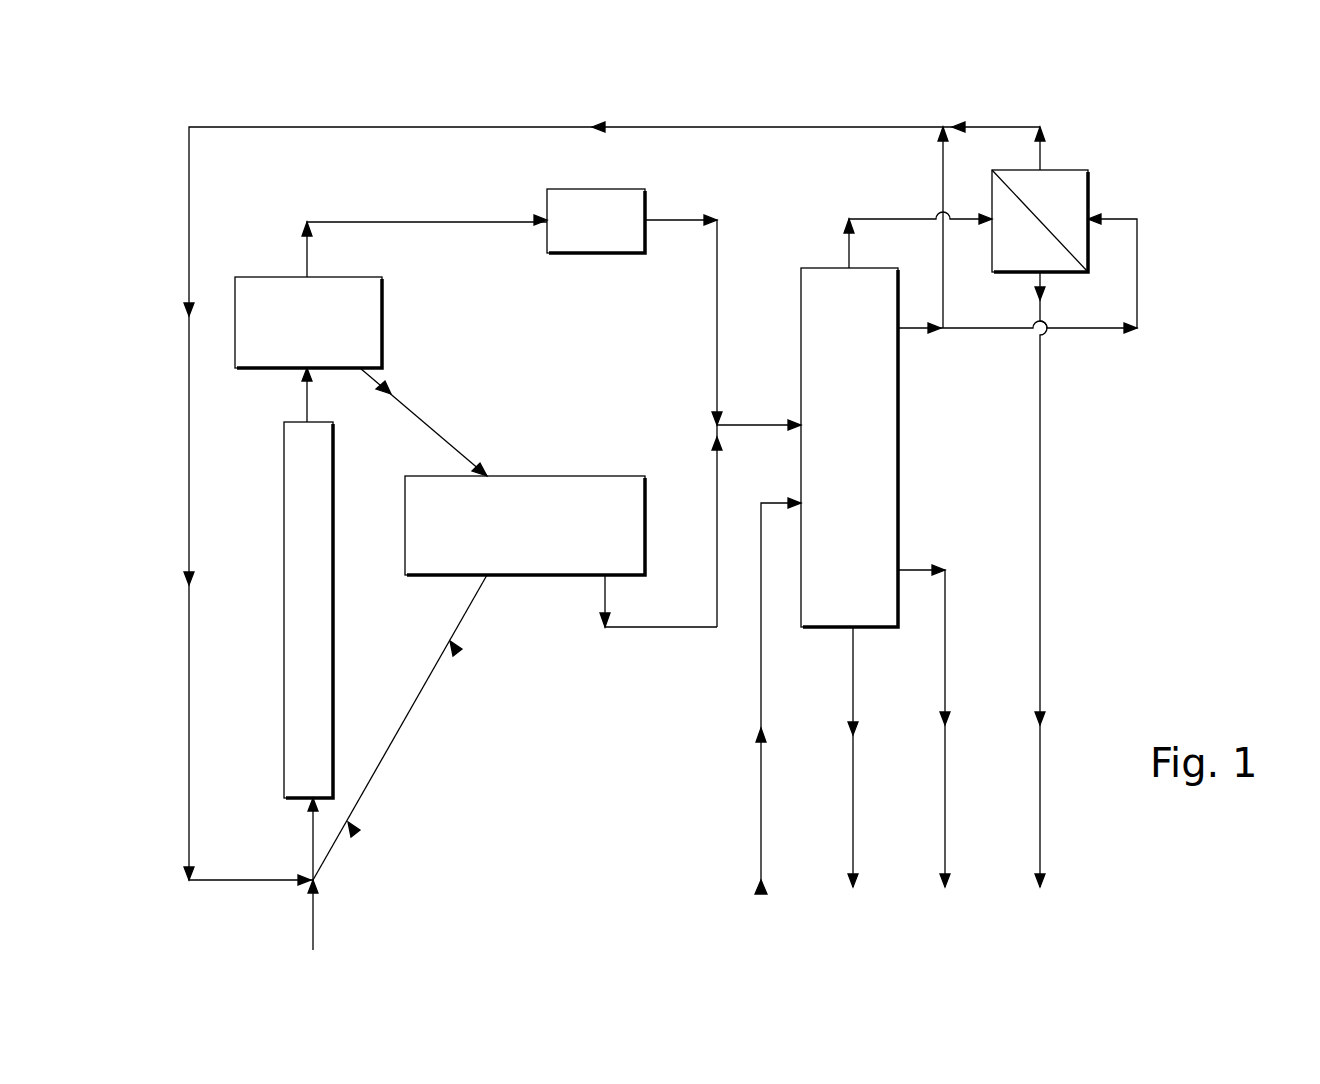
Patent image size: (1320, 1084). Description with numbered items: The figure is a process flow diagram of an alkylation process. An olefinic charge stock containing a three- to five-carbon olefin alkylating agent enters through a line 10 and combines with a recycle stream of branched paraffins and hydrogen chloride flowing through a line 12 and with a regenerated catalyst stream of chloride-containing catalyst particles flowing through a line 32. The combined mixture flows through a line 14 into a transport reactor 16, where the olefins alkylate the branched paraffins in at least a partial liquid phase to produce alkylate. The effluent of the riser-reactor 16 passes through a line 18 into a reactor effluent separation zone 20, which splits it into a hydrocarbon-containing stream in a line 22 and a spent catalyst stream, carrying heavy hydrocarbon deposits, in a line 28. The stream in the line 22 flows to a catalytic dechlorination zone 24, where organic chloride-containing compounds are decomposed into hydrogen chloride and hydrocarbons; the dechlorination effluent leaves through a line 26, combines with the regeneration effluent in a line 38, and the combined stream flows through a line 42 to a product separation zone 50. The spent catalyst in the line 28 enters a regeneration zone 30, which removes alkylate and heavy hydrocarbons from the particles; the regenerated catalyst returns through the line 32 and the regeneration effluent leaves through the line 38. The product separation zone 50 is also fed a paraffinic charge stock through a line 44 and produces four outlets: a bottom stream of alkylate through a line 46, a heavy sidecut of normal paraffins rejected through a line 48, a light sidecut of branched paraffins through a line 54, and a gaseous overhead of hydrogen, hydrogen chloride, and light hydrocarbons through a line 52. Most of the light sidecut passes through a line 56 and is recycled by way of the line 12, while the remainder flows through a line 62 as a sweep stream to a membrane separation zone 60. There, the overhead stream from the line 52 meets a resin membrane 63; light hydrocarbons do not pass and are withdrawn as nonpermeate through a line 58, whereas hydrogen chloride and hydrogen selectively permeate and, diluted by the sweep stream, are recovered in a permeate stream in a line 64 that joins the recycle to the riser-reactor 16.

The line 10 is at (315, 945).
The line 12 is at (190, 185).
The line 14 is at (312, 850).
The transport reactor 16 is at (284, 516).
The line 18 is at (306, 398).
The reactor effluent separation zone 20 is at (308, 322).
The line 22 is at (352, 222).
The catalytic dechlorination zone 24 is at (596, 221).
The line 26 is at (718, 262).
The line 28 is at (412, 410).
The regeneration zone 30 is at (525, 525).
The line 32 is at (400, 735).
The line 38 is at (658, 628).
The line 42 is at (760, 422).
The line 44 is at (760, 746).
The line 46 is at (848, 677).
The line 48 is at (944, 748).
The product separation zone 50 is at (849, 447).
The line 52 is at (865, 213).
The line 54 is at (920, 328).
The line 56 is at (942, 157).
The line 58 is at (1042, 310).
The membrane separation zone 60 is at (1072, 170).
The line 62 is at (998, 328).
The membrane 63 is at (1050, 228).
The line 64 is at (1020, 127).